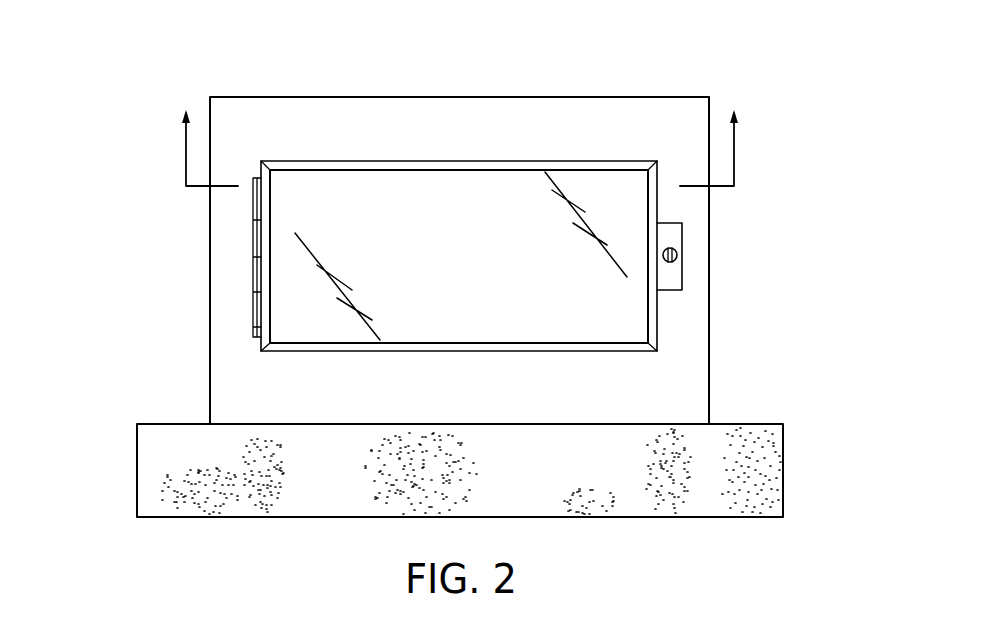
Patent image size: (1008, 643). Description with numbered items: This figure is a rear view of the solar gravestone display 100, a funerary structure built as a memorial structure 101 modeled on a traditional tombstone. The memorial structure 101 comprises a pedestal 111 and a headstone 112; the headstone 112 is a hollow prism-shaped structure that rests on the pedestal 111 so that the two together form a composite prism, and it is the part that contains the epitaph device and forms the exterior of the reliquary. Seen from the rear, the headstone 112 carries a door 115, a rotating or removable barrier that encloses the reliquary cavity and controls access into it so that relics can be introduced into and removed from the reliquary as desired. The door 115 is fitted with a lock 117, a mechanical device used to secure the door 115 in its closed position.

The solar gravestone display 100 is at (108, 105).
The memorial structure 101 is at (210, 312).
The pedestal 111 is at (777, 466).
The headstone 112 is at (688, 368).
The door 115 is at (549, 215).
The lock 117 is at (677, 253).